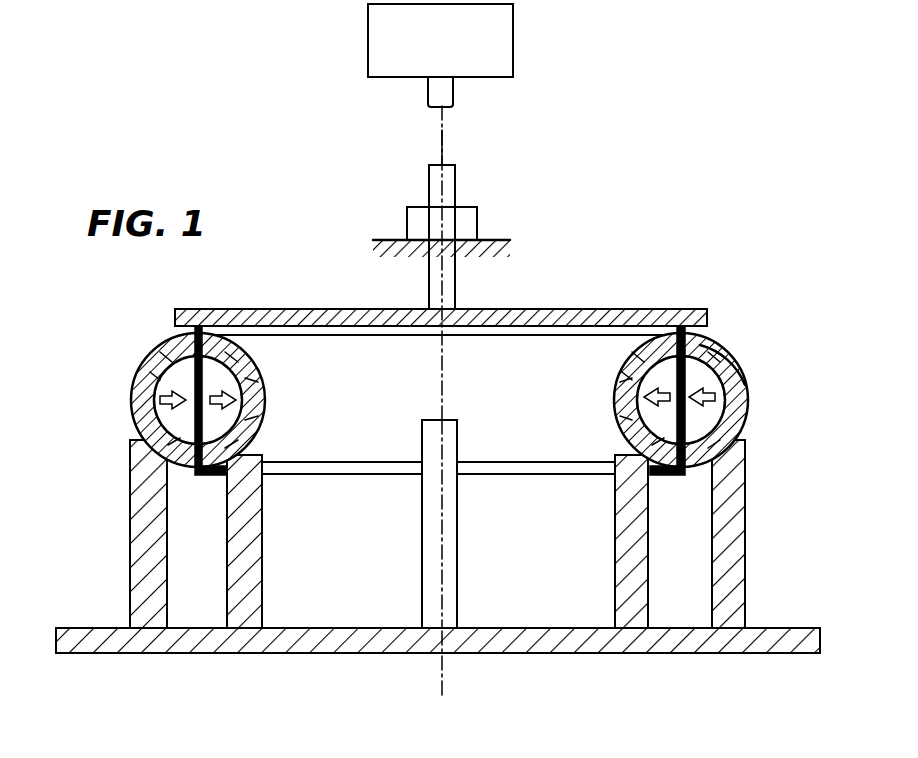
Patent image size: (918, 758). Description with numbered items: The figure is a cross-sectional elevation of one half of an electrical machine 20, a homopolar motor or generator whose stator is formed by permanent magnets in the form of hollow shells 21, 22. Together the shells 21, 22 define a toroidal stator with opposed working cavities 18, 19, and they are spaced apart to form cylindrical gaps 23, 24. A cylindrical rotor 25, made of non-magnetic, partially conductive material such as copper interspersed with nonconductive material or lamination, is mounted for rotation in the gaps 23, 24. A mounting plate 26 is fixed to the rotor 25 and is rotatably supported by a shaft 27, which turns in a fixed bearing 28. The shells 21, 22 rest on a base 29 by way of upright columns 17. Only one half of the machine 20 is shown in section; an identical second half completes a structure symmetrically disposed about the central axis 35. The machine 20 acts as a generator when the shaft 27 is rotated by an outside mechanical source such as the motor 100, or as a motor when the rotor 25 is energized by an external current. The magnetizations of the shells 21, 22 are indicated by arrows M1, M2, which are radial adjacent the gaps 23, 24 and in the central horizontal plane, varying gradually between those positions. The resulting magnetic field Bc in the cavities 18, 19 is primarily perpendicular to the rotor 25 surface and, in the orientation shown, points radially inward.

The motor 100 is at (514, 32).
The central axis 35 is at (443, 150).
The fixed bearing 28 is at (467, 223).
The shaft 27 is at (452, 285).
The electrical machine 20 is at (645, 240).
The mounting plate 26 is at (283, 318).
The cylindrical gap 23 is at (686, 330).
The hollow shell 21 is at (745, 350).
The hollow shell 22 is at (440, 362).
The cylindrical rotor 25 is at (525, 475).
The cylindrical gap 24 is at (683, 476).
The upright column 17 is at (135, 555).
The base 29 is at (575, 645).
The cavity 18 is at (165, 418).
The cavity 19 is at (233, 412).
The magnetization M1 is at (185, 340).
The magnetization M2 is at (262, 383).
The magnetic field Bc is at (135, 387).